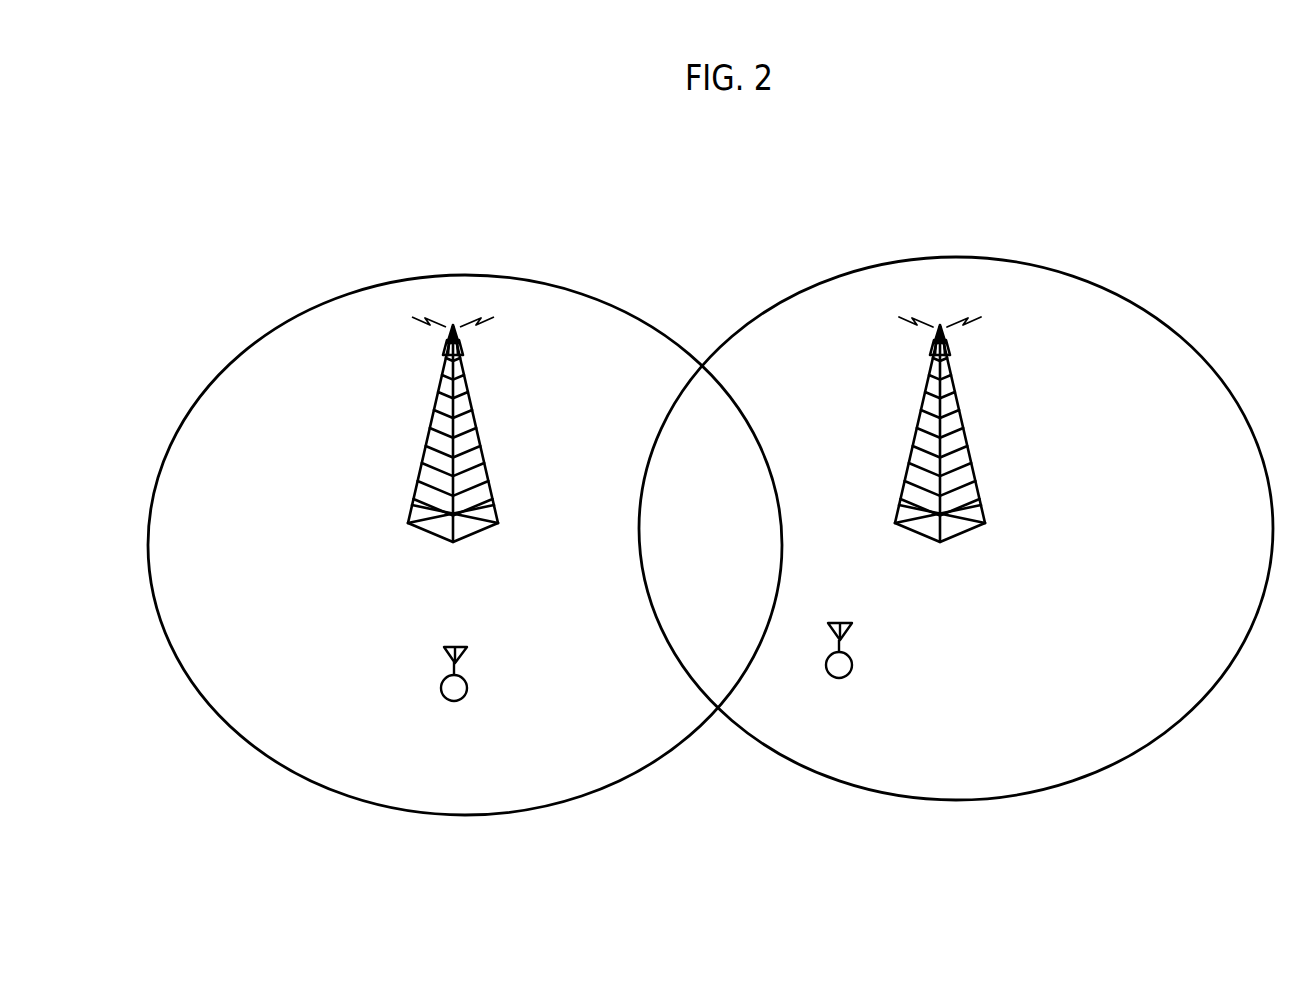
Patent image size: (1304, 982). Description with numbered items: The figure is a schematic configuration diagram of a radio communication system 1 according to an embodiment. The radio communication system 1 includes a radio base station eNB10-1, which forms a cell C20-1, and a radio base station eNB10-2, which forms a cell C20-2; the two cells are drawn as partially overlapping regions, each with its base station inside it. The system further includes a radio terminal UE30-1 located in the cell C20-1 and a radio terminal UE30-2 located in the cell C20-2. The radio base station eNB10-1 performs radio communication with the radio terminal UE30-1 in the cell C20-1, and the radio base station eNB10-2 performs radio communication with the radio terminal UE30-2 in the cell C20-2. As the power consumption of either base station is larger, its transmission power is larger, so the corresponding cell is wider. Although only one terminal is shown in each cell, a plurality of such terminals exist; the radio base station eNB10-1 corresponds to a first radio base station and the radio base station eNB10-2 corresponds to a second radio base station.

The radio communication system 1 is at (995, 131).
The cell C20-1 is at (330, 297).
The cell C20-2 is at (820, 283).
The radio base station eNB10-1 is at (475, 412).
The radio base station eNB10-2 is at (962, 412).
The radio terminal UE30-1 is at (438, 690).
The radio terminal UE30-2 is at (852, 665).